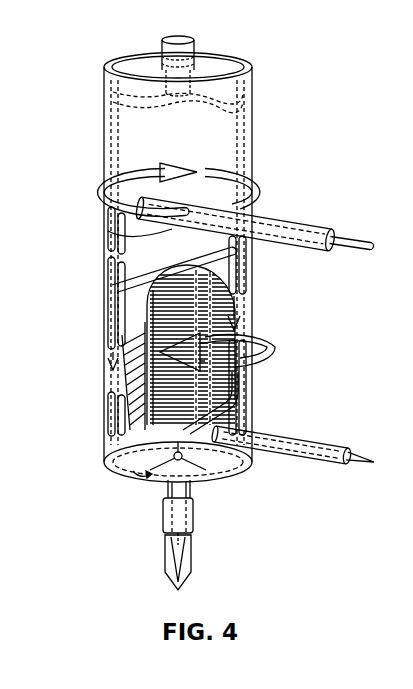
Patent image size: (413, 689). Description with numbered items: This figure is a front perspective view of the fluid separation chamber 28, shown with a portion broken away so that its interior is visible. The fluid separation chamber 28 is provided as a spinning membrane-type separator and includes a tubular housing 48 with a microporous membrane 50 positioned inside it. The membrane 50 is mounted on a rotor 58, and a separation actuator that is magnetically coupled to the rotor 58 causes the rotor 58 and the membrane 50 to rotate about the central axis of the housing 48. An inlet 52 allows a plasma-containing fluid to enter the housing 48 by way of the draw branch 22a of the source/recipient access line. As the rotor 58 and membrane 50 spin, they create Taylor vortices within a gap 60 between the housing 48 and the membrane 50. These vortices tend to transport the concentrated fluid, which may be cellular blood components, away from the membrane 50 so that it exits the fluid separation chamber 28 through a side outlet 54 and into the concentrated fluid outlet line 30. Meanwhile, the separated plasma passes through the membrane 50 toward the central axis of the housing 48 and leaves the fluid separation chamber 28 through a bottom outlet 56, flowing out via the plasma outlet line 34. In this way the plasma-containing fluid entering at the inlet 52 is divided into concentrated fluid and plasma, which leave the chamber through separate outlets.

The fluid separation chamber 28 is at (251, 46).
The tubular housing 48 is at (110, 123).
The rotor 58 is at (254, 109).
The gap 60 is at (253, 120).
The draw branch 22a is at (258, 222).
The inlet 52 is at (122, 238).
The microporous membrane 50 is at (133, 303).
The side outlet 54 is at (283, 438).
The concentrated fluid outlet line 30 is at (322, 468).
The bottom outlet 56 is at (168, 518).
The plasma outlet line 34 is at (192, 558).